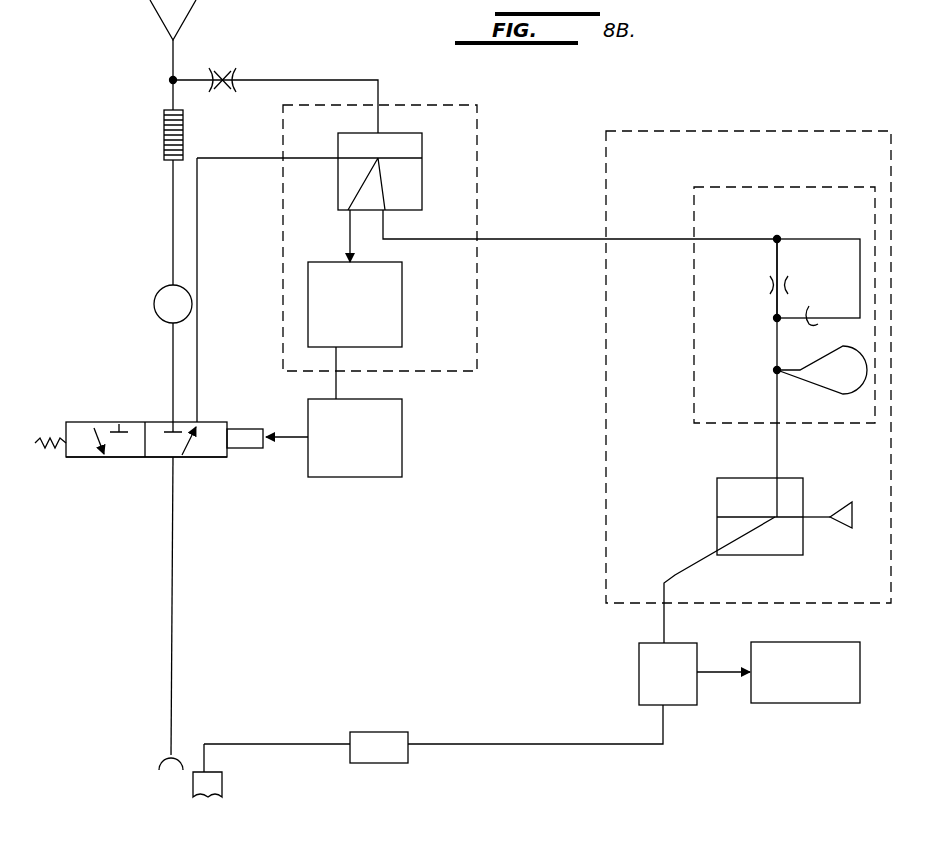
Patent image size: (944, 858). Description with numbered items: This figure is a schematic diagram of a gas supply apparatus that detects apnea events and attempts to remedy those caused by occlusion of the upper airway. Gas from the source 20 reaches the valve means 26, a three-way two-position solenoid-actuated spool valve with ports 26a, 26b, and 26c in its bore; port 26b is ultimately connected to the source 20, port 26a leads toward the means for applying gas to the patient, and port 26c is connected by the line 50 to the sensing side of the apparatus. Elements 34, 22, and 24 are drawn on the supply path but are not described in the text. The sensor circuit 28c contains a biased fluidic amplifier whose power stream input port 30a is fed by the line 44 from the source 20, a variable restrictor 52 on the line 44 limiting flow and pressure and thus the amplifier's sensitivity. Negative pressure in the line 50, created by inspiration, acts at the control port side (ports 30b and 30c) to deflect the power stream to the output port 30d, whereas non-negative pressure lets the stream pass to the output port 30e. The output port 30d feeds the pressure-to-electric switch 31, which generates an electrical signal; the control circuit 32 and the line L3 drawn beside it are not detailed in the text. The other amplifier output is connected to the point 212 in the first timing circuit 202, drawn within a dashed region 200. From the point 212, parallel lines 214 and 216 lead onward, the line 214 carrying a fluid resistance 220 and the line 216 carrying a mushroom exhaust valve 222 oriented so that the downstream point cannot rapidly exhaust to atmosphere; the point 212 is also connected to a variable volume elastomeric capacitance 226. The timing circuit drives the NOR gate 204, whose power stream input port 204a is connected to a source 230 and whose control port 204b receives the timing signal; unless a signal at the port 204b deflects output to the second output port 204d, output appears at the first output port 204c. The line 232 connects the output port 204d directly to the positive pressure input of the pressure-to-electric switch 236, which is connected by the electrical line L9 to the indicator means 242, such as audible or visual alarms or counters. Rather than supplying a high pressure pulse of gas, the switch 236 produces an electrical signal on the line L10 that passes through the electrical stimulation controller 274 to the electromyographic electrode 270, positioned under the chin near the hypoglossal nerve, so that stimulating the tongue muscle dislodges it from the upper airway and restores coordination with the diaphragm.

The source 20 is at (195, 5).
The variable restrictor 52 is at (226, 76).
The line 44 is at (318, 79).
The junction line 34 is at (172, 96).
The restrictor 22 is at (184, 132).
The line 50 is at (197, 210).
The sensor circuit 28c is at (445, 105).
The power stream input port 30a is at (380, 132).
The control port 30b is at (338, 158).
The control port 30c is at (422, 157).
The output port 30d is at (346, 211).
The output port 30e is at (386, 212).
The pressure-to-electric switch 31 is at (402, 300).
The gauge 24 is at (154, 304).
The valve means 26 is at (55, 400).
The port 26a is at (104, 457).
The port 26b is at (94, 428).
The port 26c is at (119, 424).
The control line L3 is at (285, 438).
The control circuit 32' 32 is at (370, 477).
The monitoring module 200' 200 is at (714, 131).
The first timing circuit 202 is at (728, 187).
The point 212 is at (777, 236).
The line 214 is at (775, 254).
The line 216 is at (860, 265).
The fluid resistance 220 is at (767, 287).
The mushroom valve 222 is at (812, 327).
The variable volume elastomeric capacitance 226 is at (810, 378).
The NOR gate 204 is at (790, 555).
The power stream input port 204a is at (805, 512).
The control port 204b is at (775, 478).
The first output port 204c is at (717, 517).
The second output port 204d is at (717, 556).
The source 230 is at (832, 522).
The line 232 is at (672, 574).
The pressure-to-electric switch 236 is at (638, 673).
The indicator means 242 is at (785, 642).
The electrical line L9 is at (726, 671).
The electrical stimulation controller 274 is at (375, 732).
The electromyographic electrode 270 is at (212, 772).
The electrical line L10 is at (475, 744).